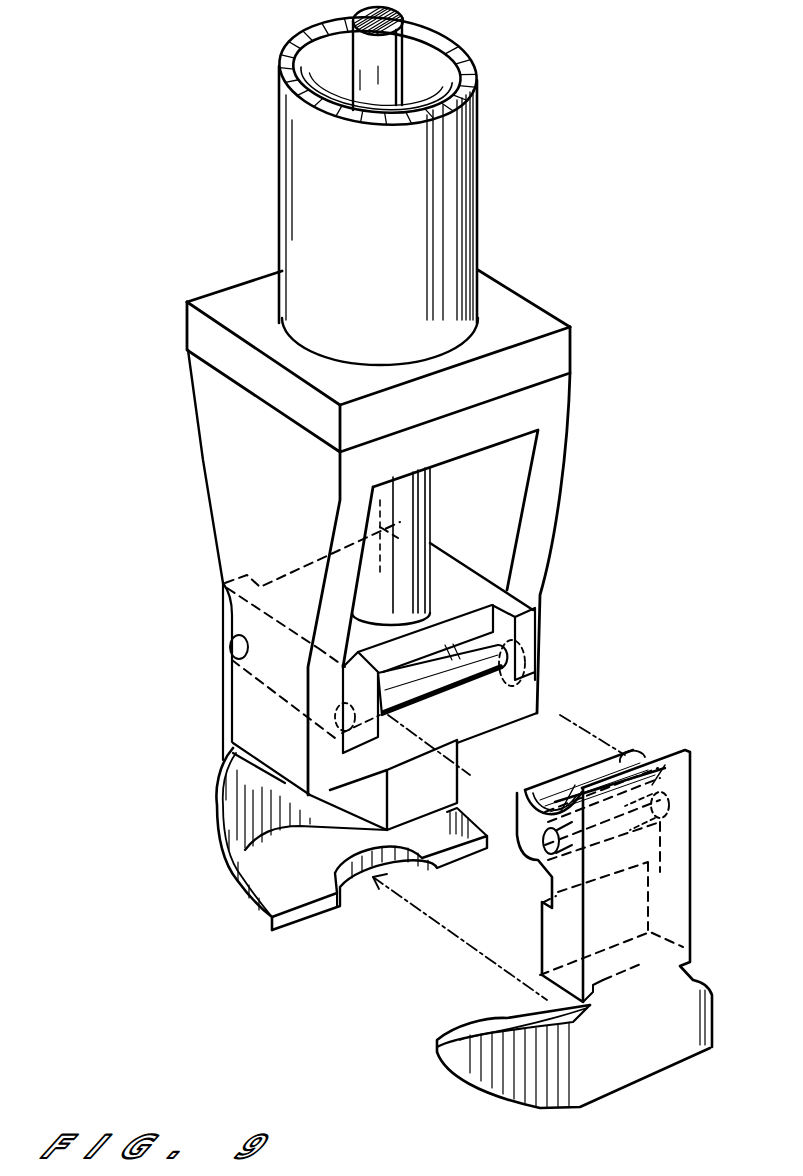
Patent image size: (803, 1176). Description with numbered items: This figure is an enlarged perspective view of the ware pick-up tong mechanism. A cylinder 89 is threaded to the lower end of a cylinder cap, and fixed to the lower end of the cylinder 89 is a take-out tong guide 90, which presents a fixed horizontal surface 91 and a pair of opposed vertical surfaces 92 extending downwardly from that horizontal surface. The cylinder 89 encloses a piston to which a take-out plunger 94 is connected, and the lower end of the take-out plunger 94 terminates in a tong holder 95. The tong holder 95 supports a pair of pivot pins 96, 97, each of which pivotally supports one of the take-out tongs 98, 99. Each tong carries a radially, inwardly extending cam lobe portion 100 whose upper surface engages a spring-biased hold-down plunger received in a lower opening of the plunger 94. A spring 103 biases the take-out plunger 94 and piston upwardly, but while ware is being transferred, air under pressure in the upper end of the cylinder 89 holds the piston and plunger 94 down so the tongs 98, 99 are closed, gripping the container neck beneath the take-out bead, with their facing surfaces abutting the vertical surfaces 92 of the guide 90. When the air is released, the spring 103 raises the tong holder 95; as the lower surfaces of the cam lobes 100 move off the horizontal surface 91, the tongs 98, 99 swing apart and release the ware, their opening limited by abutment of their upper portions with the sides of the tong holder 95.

The cylinder 89 is at (458, 152).
The take-out tong guide 90 is at (555, 458).
The horizontal surface 91 is at (467, 698).
The vertical surfaces 92 is at (440, 801).
The take-out plunger 94 is at (412, 30).
The tong holder 95 is at (480, 597).
The pivot pin 96 is at (490, 670).
The pivot pin 97 is at (237, 650).
The take-out tong 98 is at (677, 903).
The take-out tong 99 is at (223, 787).
The cam lobe portion 100 is at (640, 752).
The spring 103 is at (447, 62).